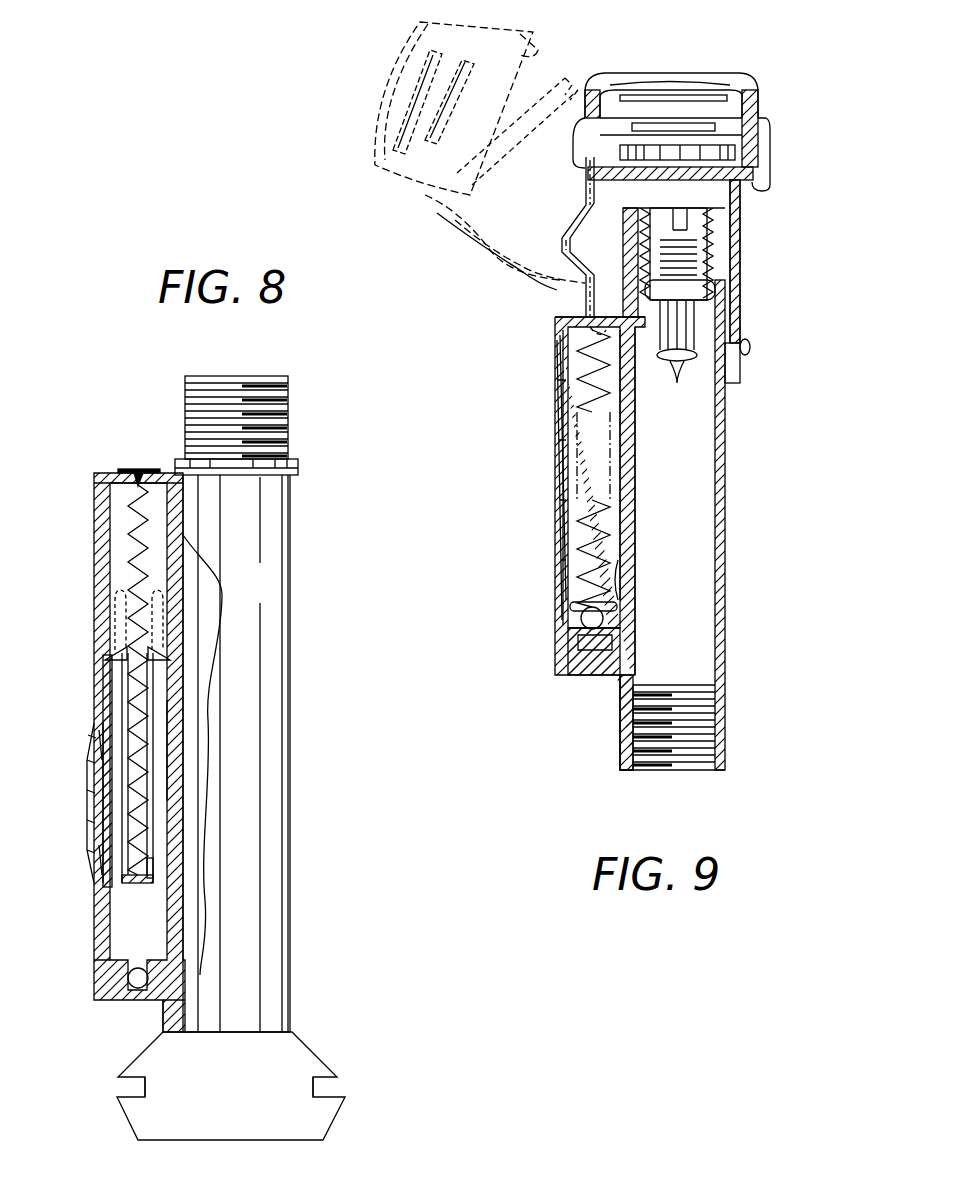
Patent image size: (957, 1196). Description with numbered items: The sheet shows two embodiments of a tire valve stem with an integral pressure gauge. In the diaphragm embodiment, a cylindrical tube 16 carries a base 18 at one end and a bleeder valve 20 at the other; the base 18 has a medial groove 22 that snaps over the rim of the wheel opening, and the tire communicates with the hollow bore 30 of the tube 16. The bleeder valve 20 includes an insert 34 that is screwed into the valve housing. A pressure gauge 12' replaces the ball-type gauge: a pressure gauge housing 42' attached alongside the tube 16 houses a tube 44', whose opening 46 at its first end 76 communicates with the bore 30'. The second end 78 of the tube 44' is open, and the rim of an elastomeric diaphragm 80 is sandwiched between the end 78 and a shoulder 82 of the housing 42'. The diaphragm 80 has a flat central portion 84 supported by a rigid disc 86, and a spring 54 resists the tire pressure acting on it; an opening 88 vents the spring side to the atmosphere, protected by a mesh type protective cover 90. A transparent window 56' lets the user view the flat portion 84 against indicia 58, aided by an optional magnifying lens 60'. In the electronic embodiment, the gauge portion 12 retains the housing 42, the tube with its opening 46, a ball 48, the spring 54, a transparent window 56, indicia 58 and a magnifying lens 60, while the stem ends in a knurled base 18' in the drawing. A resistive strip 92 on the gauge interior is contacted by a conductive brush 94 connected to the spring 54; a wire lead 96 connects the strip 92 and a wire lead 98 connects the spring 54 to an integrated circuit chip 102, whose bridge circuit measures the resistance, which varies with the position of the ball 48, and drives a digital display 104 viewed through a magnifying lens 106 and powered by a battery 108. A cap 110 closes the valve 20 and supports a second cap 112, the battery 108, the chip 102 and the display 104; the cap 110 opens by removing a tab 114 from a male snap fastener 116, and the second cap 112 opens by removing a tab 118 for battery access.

In FIG. 9, the gauge portion 12 is at (603, 543).
In FIG. 8, the pressure gauge 12' is at (100, 728).
In FIG. 8, the cylindrical tube 16 is at (293, 660).
In FIG. 9, the cylindrical tube 16 is at (727, 500).
In FIG. 8, the base 18 is at (246, 1067).
In FIG. 9, the base (knurled) 18' is at (687, 744).
In FIG. 8, the bleeder valve 20 is at (290, 400).
In FIG. 9, the bleeder valve 20 is at (720, 275).
In FIG. 8, the medial groove 22 is at (318, 1092).
In FIG. 9, the hollow bore 30 is at (721, 501).
In FIG. 8, the bore 30' is at (214, 750).
In FIG. 9, the insert 34 is at (695, 300).
In FIG. 9, the pressure gauge housing 42 is at (551, 307).
In FIG. 8, the pressure gauge housing 42' is at (100, 500).
In FIG. 8, the tube 44' is at (103, 967).
In FIG. 8, the opening 46 is at (140, 992).
In FIG. 9, the opening 46 is at (600, 640).
In FIG. 9, the ball 48 is at (555, 645).
In FIG. 8, the spring 54 is at (140, 540).
In FIG. 9, the spring 54 is at (560, 395).
In FIG. 9, the transparent window 56 is at (523, 467).
In FIG. 8, the transparent window 56' is at (62, 802).
In FIG. 8, the indicia 58 is at (92, 748).
In FIG. 9, the indicia 58 is at (555, 490).
In FIG. 9, the magnifying lens 60 is at (518, 477).
In FIG. 8, the magnifying lens 60' is at (62, 803).
In FIG. 8, the first end 76 is at (192, 960).
In FIG. 8, the second end 78 is at (190, 682).
In FIG. 8, the elastomeric diaphragm 80 is at (115, 690).
In FIG. 8, the shoulder 82 is at (110, 650).
In FIG. 8, the flat central portion 84 is at (130, 884).
In FIG. 8, the rigid disc 86 is at (160, 870).
In FIG. 8, the opening 88 is at (142, 469).
In FIG. 8, the mesh type protective cover 90 is at (128, 472).
In FIG. 9, the resistive strip 92 is at (635, 505).
In FIG. 9, the conductive brush 94 is at (635, 562).
In FIG. 9, the wire lead 96 is at (570, 193).
In FIG. 9, the wire lead 98 is at (560, 228).
In FIG. 9, the integrated circuit chip 102 is at (680, 125).
In FIG. 9, the digital display 104 is at (640, 97).
In FIG. 9, the magnifying lens 106 is at (735, 75).
In FIG. 9, the battery 108 is at (737, 152).
In FIG. 9, the cap 110 is at (585, 160).
In FIG. 9, the second cap 112 is at (770, 115).
In FIG. 9, the tab 114 is at (740, 235).
In FIG. 9, the male snap fastener 116 is at (748, 356).
In FIG. 9, the tab 118 is at (762, 185).